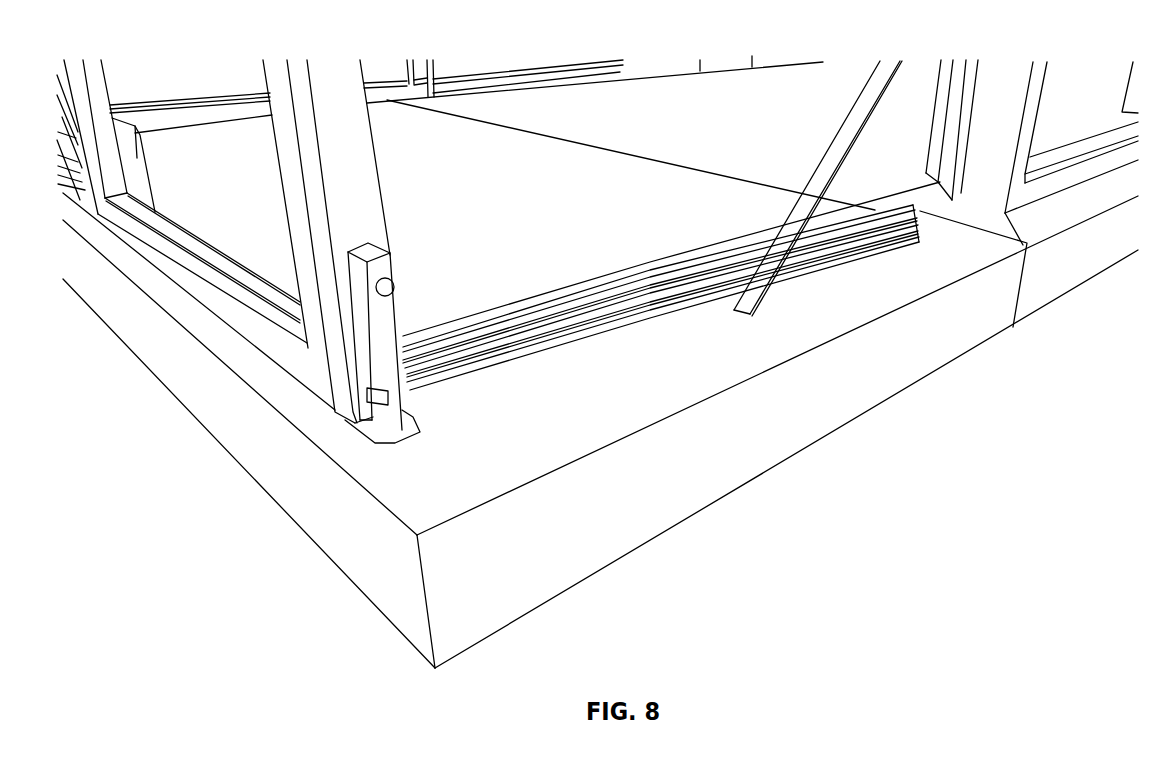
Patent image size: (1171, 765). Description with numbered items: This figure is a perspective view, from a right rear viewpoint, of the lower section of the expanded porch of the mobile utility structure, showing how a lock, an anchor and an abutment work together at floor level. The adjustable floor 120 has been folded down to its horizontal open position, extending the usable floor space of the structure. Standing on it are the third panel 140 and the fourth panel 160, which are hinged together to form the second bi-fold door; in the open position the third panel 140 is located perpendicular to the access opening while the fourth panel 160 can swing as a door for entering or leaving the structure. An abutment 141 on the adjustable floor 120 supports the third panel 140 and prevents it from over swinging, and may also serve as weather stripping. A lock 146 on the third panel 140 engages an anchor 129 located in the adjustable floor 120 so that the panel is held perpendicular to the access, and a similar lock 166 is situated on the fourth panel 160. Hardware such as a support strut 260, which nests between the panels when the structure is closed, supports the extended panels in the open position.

The adjustable floor 120 is at (220, 366).
The anchor 129 is at (418, 430).
The third panel 140 is at (937, 200).
The abutment 141 is at (610, 325).
The lock 146 is at (360, 421).
The fourth panel 160 is at (177, 258).
The lock 166 is at (132, 157).
The support strut 260 is at (763, 297).